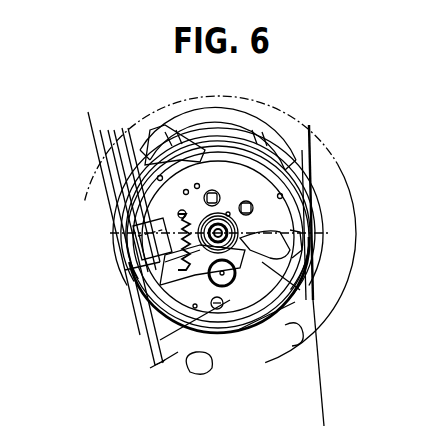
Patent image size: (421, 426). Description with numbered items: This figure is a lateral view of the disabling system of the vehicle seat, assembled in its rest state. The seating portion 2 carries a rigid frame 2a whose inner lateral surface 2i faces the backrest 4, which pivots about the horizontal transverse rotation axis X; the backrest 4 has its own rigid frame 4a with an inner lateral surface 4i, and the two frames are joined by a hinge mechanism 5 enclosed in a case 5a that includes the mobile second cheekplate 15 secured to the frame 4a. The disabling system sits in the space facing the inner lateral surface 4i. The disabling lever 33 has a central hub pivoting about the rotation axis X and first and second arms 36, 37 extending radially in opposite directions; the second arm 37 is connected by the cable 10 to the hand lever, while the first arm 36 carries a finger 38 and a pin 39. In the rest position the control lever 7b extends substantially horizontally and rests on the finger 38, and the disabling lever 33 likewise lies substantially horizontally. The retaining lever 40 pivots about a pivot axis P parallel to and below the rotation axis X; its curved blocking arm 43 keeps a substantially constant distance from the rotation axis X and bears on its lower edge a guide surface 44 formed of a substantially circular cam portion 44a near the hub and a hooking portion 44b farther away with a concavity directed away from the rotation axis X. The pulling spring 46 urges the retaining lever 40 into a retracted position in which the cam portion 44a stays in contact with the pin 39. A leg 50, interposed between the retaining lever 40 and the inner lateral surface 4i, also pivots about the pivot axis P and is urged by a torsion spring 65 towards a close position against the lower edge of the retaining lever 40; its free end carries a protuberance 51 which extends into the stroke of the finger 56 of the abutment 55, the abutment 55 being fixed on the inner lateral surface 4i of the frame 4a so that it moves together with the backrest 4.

The seating portion 2 is at (358, 270).
The rigid frame of the seating portion 2a is at (143, 340).
The inner lateral surface of the seating portion frame 2i is at (160, 311).
The backrest 4 is at (92, 150).
The rigid frame of the backrest 4a is at (320, 138).
The inner lateral surface of the backrest frame 4i is at (104, 180).
The hinge mechanism 5 is at (286, 146).
The case 5a is at (300, 170).
The control lever 7b is at (255, 219).
The cable 10 is at (118, 142).
The second cheekplate 15 is at (232, 196).
The disabling lever 33 is at (292, 330).
The first arm 36 is at (312, 310).
The second arm 37 is at (134, 240).
The finger 38 is at (300, 258).
The pin 39 is at (322, 295).
The retaining lever 40 is at (278, 193).
The blocking arm 43 is at (305, 260).
The guide surface 44 is at (302, 318).
The cam portion 44a is at (262, 246).
The hooking portion 44b is at (245, 206).
The pulling spring 46 is at (177, 240).
The leg 50 is at (222, 308).
The protuberance 51 is at (250, 326).
The abutment 55 is at (200, 328).
The finger 56 is at (272, 302).
The torsion spring 65 is at (172, 280).
The pivot axis P is at (150, 292).
The rotation axis X is at (182, 254).